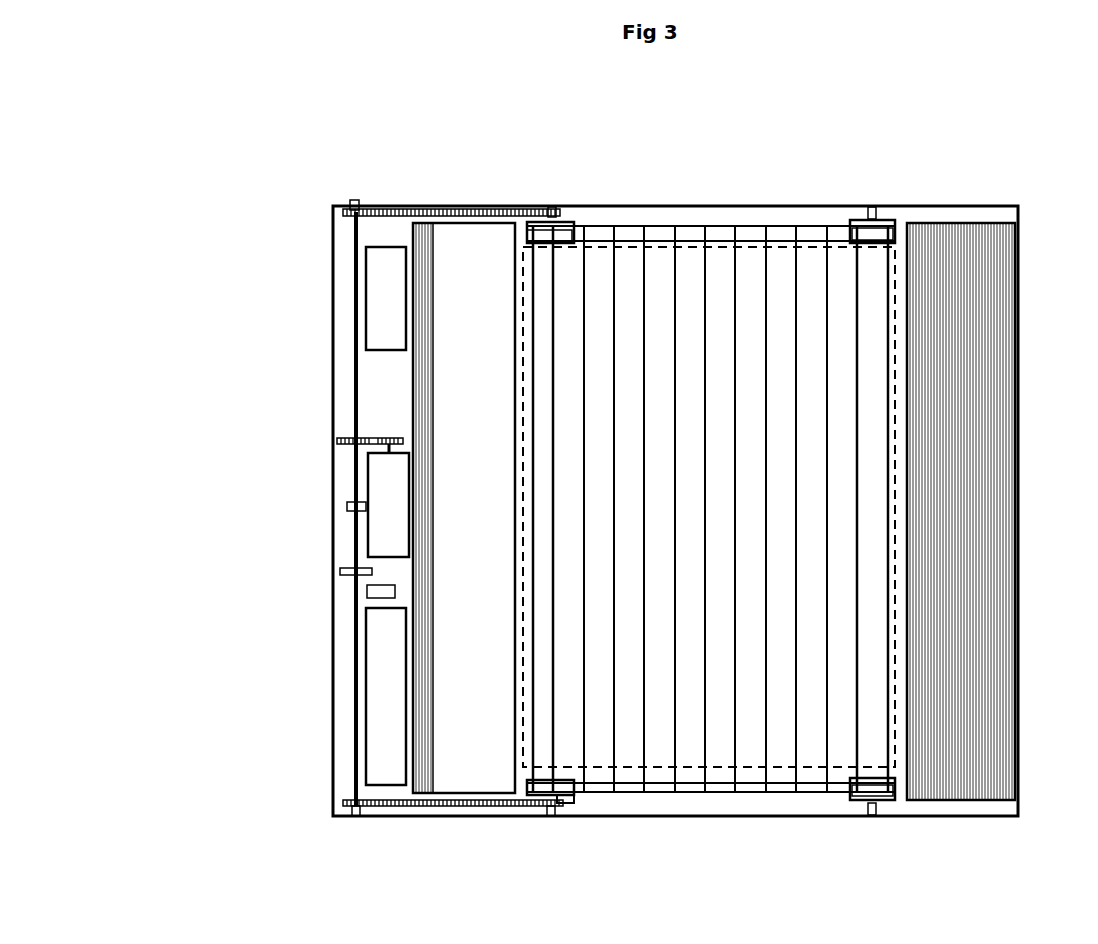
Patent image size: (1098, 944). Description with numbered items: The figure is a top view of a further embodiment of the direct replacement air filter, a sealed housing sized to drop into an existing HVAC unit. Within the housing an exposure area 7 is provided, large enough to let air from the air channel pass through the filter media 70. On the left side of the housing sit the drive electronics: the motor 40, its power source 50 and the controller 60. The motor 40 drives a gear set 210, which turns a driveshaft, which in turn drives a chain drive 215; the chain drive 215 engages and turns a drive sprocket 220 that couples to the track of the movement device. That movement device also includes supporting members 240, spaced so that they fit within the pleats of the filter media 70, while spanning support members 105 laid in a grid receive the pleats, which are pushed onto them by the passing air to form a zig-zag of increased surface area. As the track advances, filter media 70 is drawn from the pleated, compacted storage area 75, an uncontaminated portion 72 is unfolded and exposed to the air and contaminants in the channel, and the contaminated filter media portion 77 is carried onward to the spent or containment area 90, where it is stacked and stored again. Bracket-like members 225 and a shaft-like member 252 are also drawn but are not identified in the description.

The exposure area 7 is at (898, 484).
The motor 40 is at (381, 487).
The power source 50 is at (381, 290).
The controller 60 is at (381, 644).
The filter media 70 is at (696, 452).
The uncontaminated filter media 72 is at (962, 217).
The filter media storage area 75 is at (962, 471).
The contaminated filter media portion 77 is at (445, 474).
The filter media take-up compartment 90 is at (515, 822).
The support members 105 is at (770, 272).
The gear set 210 is at (370, 436).
The chain drive 215 is at (372, 192).
The drive sprocket 220 is at (557, 822).
The side bracket 225 is at (845, 803).
The supporting members 240 is at (666, 232).
The shaft 252 is at (352, 712).